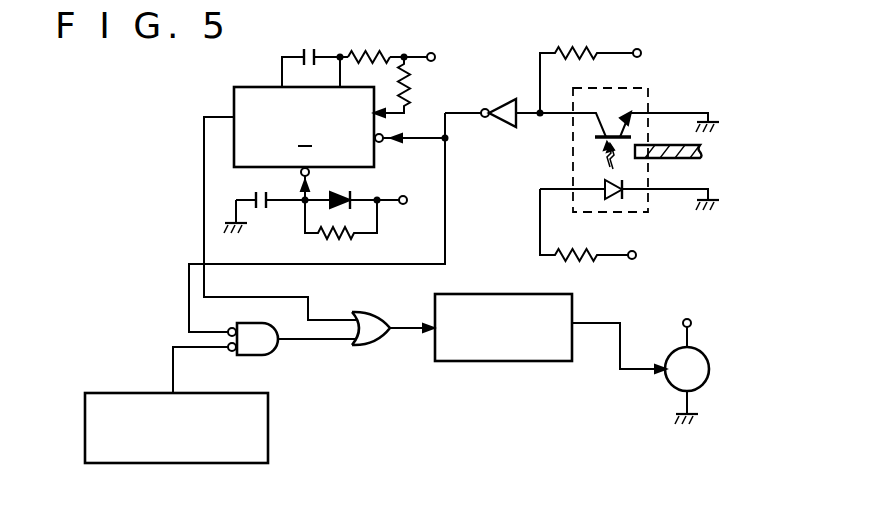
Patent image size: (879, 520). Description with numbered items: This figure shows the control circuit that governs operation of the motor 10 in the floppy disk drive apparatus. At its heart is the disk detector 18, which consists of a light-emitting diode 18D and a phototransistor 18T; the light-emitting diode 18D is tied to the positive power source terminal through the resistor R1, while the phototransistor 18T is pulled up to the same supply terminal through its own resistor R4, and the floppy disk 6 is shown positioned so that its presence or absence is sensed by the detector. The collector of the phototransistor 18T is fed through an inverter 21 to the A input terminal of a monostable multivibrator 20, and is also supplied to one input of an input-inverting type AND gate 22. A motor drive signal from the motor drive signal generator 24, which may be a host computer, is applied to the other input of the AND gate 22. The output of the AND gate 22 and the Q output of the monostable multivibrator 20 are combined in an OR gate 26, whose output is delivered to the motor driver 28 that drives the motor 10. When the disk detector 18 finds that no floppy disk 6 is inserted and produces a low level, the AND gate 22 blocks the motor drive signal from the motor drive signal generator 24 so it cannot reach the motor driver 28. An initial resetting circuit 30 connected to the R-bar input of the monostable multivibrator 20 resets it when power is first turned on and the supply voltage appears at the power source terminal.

The monostable multivibrator 20 is at (234, 92).
The initial resetting circuit 30 is at (305, 223).
The inverter 21 is at (495, 103).
The pull-up resistor R4 is at (585, 50).
The disk detector 18 is at (573, 160).
The phototransistor 18T is at (606, 115).
The light-emitting diode 18D is at (612, 212).
The floppy disk 6 is at (700, 157).
The resistor R1 is at (578, 262).
The input inverting type AND gate 22 is at (268, 356).
The OR gate 26 is at (374, 346).
The motor driver 28 is at (497, 362).
The motor drive signal generator 24 is at (268, 433).
The motor 10 is at (709, 370).